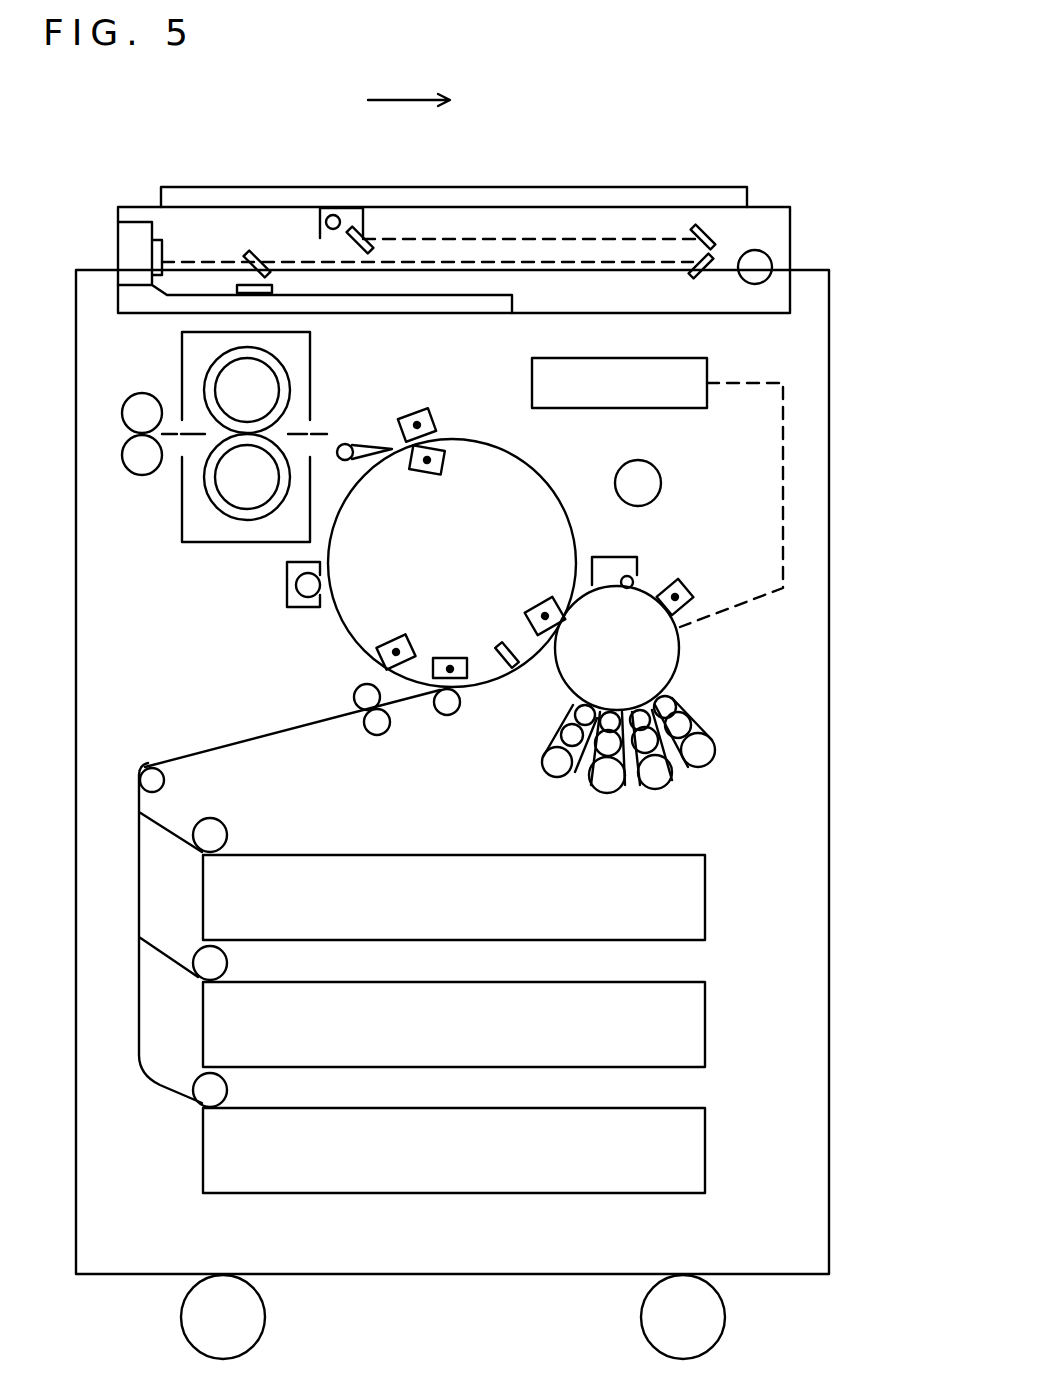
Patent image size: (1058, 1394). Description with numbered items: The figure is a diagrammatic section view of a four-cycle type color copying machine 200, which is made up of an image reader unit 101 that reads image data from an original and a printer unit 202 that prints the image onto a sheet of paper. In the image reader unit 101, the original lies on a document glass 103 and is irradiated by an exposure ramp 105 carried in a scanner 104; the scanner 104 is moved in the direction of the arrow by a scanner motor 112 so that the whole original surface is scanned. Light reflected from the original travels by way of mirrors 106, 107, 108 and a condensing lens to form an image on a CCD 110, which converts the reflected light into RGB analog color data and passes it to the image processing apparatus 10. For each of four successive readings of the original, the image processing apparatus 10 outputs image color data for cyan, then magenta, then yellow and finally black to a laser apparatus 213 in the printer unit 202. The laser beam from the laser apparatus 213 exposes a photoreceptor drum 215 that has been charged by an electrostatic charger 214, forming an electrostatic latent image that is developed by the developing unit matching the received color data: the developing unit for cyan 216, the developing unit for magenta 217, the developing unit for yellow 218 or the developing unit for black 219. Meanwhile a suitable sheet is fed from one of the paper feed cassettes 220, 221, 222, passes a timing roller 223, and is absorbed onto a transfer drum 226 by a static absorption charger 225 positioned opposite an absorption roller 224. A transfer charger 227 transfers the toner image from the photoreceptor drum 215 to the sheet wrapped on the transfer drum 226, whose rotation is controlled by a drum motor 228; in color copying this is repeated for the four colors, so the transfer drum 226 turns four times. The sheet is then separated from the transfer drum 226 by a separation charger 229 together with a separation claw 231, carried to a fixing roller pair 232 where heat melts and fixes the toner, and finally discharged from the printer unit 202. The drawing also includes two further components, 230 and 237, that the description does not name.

The color copying machine 200 is at (847, 108).
The printer unit 202 is at (802, 657).
The image reader unit 101 is at (778, 231).
The image processing apparatus 10 is at (403, 314).
The document glass 103 is at (471, 197).
The scanner 104 is at (353, 207).
The exposure ramp 105 is at (331, 212).
The mirror 106 is at (699, 230).
The mirror 107 is at (712, 253).
The mirror 108 is at (249, 253).
The CCD 110 is at (243, 284).
The scanner motor 112 is at (773, 256).
The laser apparatus 213 is at (607, 358).
The electrostatic charger 214 is at (679, 587).
The photoreceptor drum 215 is at (680, 652).
The developing unit for cyan 216 is at (707, 757).
The developing unit for magenta 217 is at (667, 792).
The developing unit for yellow 218 is at (607, 793).
The developing unit for black 219 is at (547, 780).
The paper feed cassette 220 is at (705, 900).
The paper feed cassette 221 is at (705, 1022).
The paper feed cassette 222 is at (705, 1147).
The timing roller 223 is at (378, 736).
The absorption roller 224 is at (447, 716).
The static absorption charger 225 is at (450, 658).
The transfer drum 226 is at (540, 474).
The transfer charger 227 is at (543, 600).
The drum motor 228 is at (663, 478).
The separation charger 229 is at (416, 412).
The charger 230 is at (400, 637).
The separation claw 231 is at (351, 447).
The fixing roller pair 232 is at (243, 497).
The cleaning blade 237 is at (507, 645).